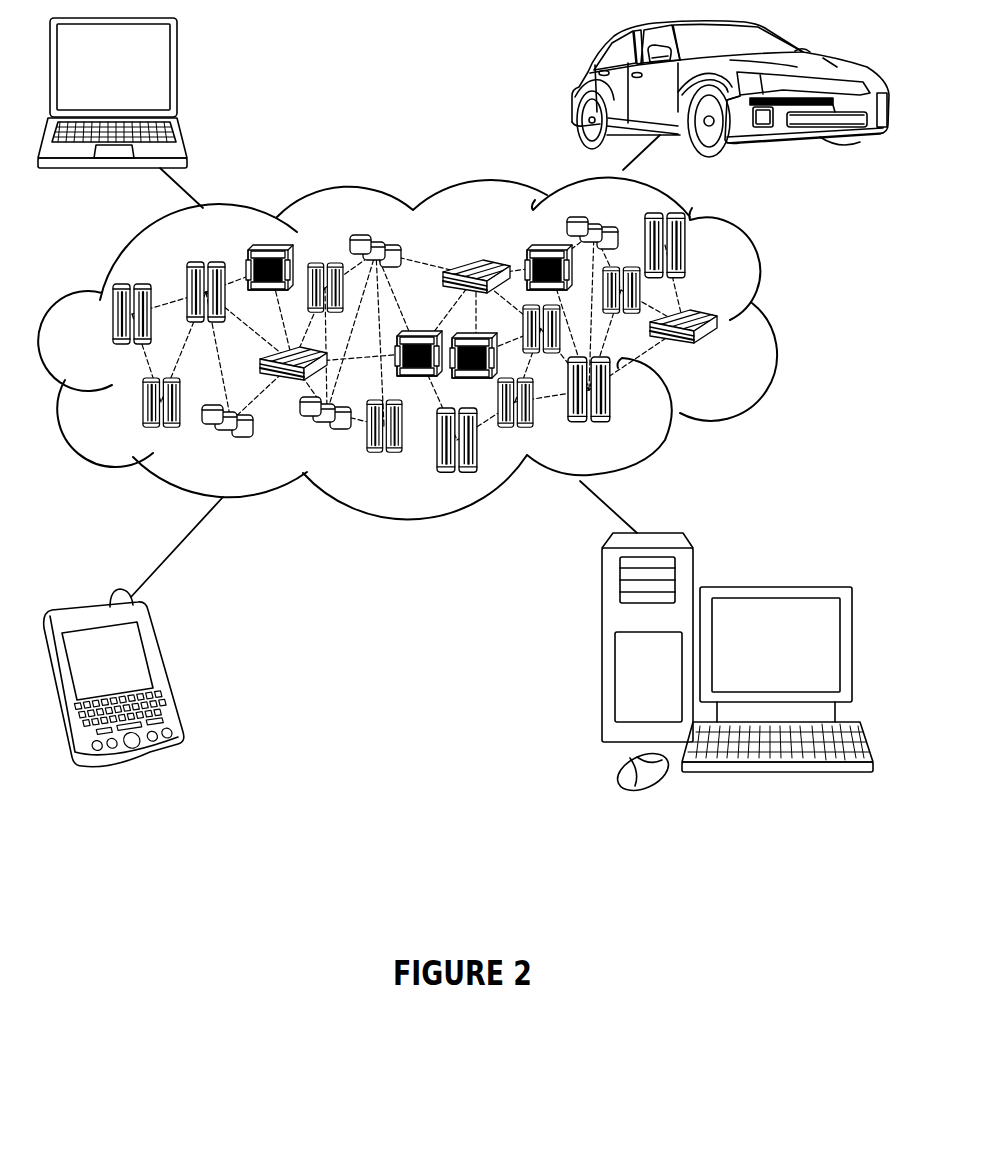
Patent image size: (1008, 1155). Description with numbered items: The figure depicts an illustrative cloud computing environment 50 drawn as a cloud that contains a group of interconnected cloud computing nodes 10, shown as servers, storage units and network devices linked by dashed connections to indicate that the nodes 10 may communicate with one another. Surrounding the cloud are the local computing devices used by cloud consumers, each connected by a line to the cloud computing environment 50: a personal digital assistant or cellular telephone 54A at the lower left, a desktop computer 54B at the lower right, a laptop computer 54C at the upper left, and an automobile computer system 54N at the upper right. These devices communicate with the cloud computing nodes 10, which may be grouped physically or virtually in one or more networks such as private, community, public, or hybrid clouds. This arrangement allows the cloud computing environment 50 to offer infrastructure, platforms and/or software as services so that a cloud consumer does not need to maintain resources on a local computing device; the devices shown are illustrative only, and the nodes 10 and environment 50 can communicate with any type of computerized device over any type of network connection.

The cloud computing nodes 10 is at (728, 354).
The cloud computing environment 50 is at (777, 323).
The personal digital assistant (PDA) or cellular telephone 54A is at (167, 668).
The desktop computer 54B is at (773, 586).
The laptop computer 54C is at (177, 72).
The automobile computer system 54N is at (575, 92).